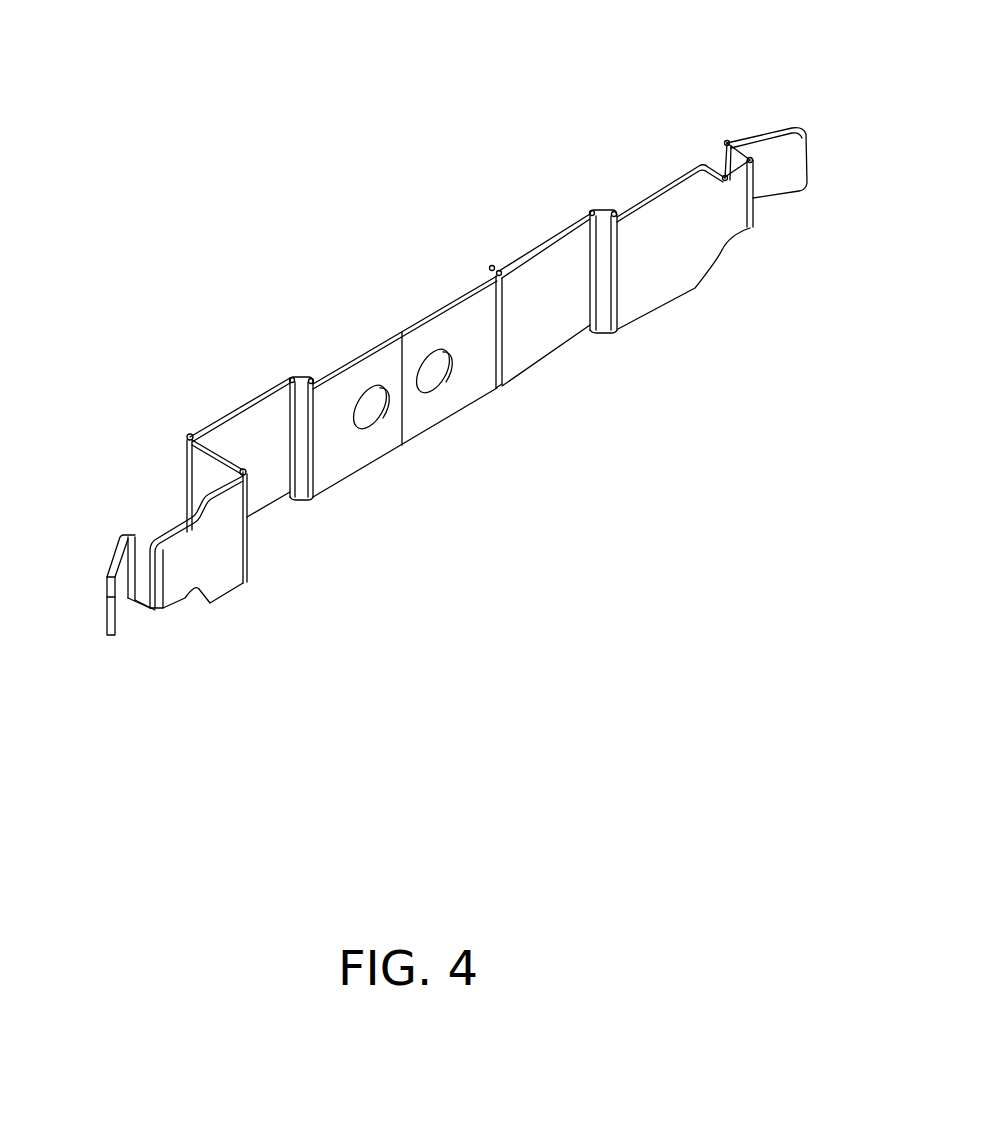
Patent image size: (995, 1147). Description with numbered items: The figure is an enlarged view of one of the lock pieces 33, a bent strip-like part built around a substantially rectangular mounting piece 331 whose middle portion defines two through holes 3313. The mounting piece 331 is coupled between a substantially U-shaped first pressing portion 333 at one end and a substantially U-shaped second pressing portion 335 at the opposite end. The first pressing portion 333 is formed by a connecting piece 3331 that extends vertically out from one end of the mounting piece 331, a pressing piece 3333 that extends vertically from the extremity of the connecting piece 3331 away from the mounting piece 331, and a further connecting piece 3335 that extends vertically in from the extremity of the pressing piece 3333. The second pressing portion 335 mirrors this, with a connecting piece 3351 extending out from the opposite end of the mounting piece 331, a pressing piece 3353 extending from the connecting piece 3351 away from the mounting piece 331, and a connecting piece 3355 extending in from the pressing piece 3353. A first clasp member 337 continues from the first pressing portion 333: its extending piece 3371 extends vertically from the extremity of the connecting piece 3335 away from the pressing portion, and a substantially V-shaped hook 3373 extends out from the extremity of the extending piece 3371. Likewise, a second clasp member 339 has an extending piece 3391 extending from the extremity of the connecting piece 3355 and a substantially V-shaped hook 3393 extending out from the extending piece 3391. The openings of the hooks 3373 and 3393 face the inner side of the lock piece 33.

The lock piece 33 is at (459, 41).
The mounting piece 331 is at (435, 338).
The through holes 3313 is at (428, 378).
The first pressing portion 333 is at (619, 70).
The connecting piece 3331 is at (491, 266).
The pressing piece 3333 is at (555, 250).
The connecting piece 3335 is at (592, 208).
The second pressing portion 335 is at (275, 282).
The connecting piece 3351 is at (295, 375).
The pressing piece 3353 is at (247, 427).
The connecting piece 3355 is at (205, 467).
The first clasp member 337 is at (860, 318).
The extending piece 3371 is at (637, 270).
The hook 3373 is at (770, 187).
The second clasp member 339 is at (297, 616).
The extending piece 3391 is at (198, 583).
The hook 3393 is at (118, 603).